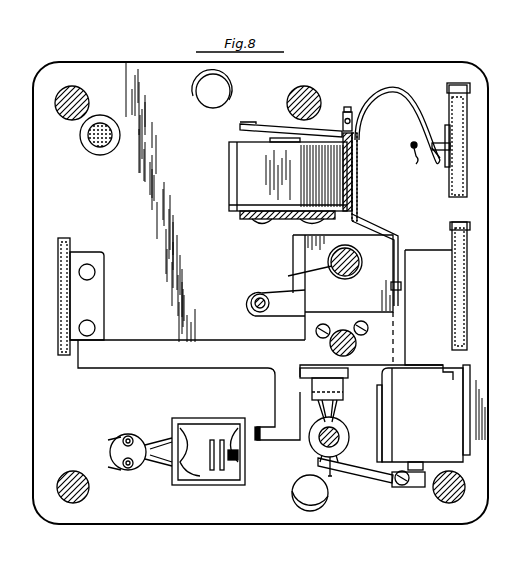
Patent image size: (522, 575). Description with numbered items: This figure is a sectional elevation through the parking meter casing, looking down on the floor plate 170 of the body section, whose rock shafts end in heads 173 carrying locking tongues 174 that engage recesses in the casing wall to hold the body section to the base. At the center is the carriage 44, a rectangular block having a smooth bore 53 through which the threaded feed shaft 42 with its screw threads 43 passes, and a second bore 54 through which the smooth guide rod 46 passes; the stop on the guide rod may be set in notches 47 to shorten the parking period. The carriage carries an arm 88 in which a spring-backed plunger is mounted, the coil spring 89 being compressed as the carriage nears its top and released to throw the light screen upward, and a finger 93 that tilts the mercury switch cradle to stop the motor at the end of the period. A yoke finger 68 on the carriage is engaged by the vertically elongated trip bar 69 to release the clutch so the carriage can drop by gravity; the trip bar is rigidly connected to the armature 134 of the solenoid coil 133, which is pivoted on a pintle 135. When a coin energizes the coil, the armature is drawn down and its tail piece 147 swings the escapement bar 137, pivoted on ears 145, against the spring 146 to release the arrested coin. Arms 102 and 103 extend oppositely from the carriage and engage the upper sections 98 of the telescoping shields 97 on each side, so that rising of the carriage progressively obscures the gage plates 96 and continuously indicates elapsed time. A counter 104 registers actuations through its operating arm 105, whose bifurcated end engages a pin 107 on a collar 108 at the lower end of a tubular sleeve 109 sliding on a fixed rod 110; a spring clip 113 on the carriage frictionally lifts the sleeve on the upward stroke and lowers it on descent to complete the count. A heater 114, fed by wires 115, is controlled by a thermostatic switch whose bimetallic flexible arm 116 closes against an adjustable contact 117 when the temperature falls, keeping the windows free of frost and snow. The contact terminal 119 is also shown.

The floor plate 170 is at (262, 515).
The head 173 is at (200, 93).
The locking tongue 174 is at (196, 76).
The solenoid coil 133 is at (245, 178).
The armature 134 is at (268, 124).
The pintle 135 is at (346, 110).
The trip bar 69 is at (358, 185).
The finger 68 is at (386, 232).
The tail piece 147 is at (404, 94).
The spring 146 is at (411, 159).
The ears 145 is at (440, 160).
The escapement bar 137 is at (442, 143).
The contact terminal 119 is at (460, 118).
The carriage 44 is at (312, 258).
The feed shaft 42 is at (358, 259).
The screw threads 43 is at (356, 272).
The bore 53 is at (300, 274).
The arm 88 is at (258, 312).
The coil spring 89 is at (250, 302).
The upper section 98 is at (62, 284).
The shield 97 is at (63, 300).
The gage plate 96 is at (66, 306).
The arm 103 is at (448, 258).
The arm 102 is at (153, 372).
The finger 93 is at (262, 427).
The notches 47 is at (330, 346).
The bore 54 is at (356, 336).
The guide rod 46 is at (345, 358).
The spring clip 113 is at (337, 412).
The fixed rod 110 is at (343, 426).
The collar 108 is at (338, 442).
The pin 107 is at (332, 472).
The tubular sleeve 109 is at (318, 460).
The operating arm 105 is at (366, 480).
The counter 104 is at (448, 428).
The wires 115 is at (118, 441).
The heater 114 is at (138, 442).
The bimetallic flexible arm 116 is at (210, 454).
The adjustable contact 117 is at (238, 455).